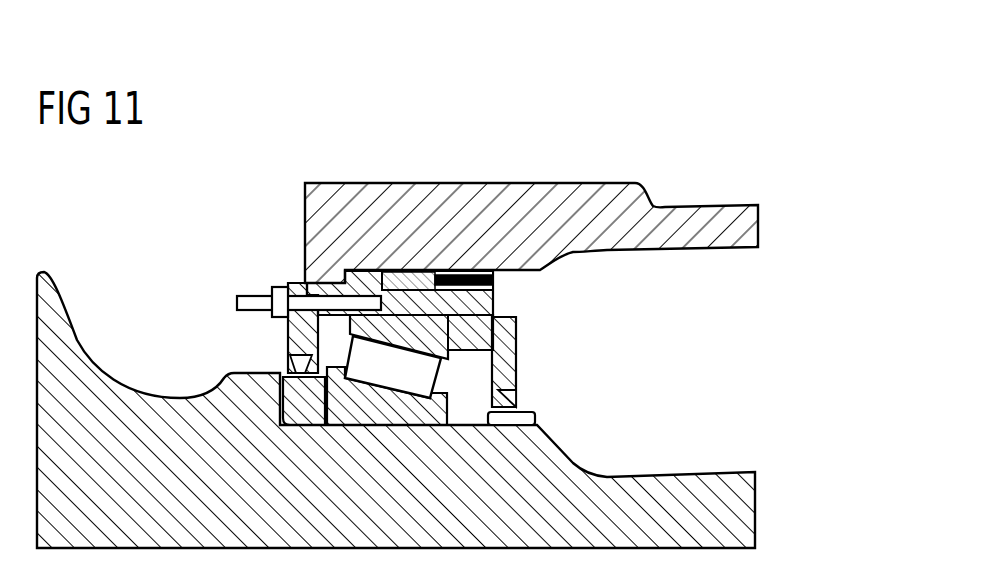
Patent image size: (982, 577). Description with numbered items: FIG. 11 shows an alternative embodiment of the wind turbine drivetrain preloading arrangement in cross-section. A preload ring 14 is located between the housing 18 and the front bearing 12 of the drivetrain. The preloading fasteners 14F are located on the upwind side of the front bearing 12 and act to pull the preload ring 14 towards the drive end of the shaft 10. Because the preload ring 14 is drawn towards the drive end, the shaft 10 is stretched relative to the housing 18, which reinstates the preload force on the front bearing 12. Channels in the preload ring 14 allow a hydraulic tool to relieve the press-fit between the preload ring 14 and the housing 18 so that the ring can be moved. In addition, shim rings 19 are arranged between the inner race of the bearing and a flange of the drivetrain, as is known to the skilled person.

The shaft 10 is at (107, 383).
The front bearing 12 is at (455, 377).
The preload ring 14 is at (495, 303).
The preloading fasteners 14F is at (253, 300).
The housing 18 is at (594, 188).
The shim rings 19 is at (300, 383).